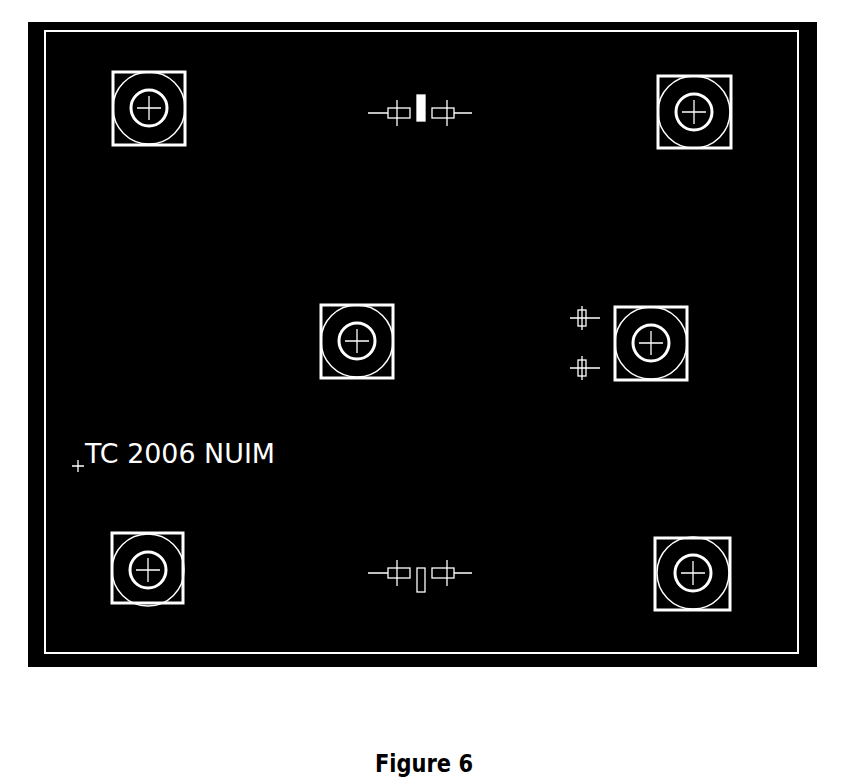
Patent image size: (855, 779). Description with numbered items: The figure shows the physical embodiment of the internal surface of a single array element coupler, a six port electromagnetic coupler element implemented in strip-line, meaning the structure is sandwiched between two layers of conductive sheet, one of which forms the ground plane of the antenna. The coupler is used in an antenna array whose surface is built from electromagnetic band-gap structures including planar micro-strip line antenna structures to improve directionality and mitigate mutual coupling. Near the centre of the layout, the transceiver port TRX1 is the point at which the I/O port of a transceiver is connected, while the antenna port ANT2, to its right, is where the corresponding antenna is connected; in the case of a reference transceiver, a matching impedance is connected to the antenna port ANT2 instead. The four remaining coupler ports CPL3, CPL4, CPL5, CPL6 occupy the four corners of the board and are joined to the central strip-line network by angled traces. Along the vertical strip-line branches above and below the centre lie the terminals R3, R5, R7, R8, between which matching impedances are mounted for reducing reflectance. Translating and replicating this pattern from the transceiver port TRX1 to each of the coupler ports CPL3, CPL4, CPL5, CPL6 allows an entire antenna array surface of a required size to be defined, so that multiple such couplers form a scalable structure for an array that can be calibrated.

The coupler port CPL3 is at (148, 555).
The coupler port CPL4 is at (692, 560).
The coupler port CPL5 is at (694, 96).
The coupler port CPL6 is at (149, 93).
The transceiver port TRX1 is at (357, 326).
The antenna port ANT2 is at (651, 328).
The terminal R3 is at (389, 108).
The terminal R5 is at (452, 108).
The terminal R7 is at (389, 567).
The terminal R8 is at (452, 567).